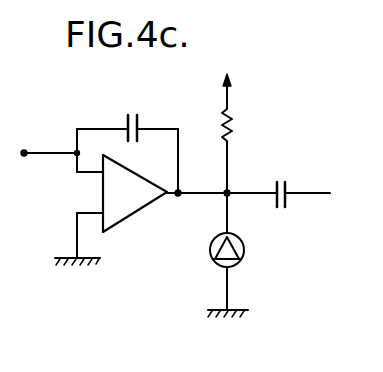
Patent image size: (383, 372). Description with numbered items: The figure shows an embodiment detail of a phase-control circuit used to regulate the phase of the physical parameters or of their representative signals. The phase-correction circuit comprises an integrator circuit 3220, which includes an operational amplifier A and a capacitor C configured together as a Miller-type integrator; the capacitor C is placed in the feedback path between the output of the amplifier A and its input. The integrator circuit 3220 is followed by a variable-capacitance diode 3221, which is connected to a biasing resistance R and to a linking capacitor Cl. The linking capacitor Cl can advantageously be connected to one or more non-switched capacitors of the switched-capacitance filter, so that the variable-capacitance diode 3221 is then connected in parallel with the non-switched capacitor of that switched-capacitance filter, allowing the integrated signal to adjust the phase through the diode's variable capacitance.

The integrator circuit 3220 is at (125, 204).
The variable-capacitance diode 3221 is at (244, 252).
The operational amplifier A is at (135, 188).
The capacitor C is at (133, 124).
The biasing resistance R is at (232, 124).
The linking capacitor Cl is at (283, 187).